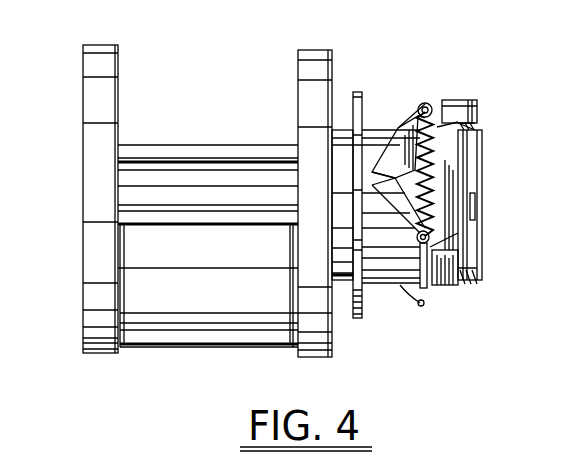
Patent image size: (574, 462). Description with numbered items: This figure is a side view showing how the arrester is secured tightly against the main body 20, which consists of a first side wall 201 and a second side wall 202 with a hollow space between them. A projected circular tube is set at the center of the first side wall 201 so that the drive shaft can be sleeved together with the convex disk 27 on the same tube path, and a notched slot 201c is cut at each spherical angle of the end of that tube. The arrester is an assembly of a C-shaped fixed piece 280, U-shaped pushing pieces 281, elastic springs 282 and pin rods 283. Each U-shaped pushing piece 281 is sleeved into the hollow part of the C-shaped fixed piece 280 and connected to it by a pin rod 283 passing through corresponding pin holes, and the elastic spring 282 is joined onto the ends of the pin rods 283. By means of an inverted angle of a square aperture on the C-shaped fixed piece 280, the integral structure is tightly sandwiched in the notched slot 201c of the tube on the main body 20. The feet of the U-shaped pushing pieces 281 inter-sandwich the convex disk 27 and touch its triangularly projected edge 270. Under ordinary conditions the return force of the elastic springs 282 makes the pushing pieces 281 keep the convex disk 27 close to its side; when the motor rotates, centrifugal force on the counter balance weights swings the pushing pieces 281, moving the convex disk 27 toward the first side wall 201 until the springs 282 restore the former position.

The main body 20 is at (219, 338).
The first side wall 201 is at (316, 62).
The second side wall 202 is at (113, 93).
The notched slot 201c is at (476, 203).
The convex disk 27 is at (378, 268).
The triangularly projected edge 270 is at (385, 172).
The C-shaped fixed piece 280 is at (440, 120).
The U-shaped pushing piece 281 is at (398, 128).
The elastic spring 282 is at (435, 105).
The pin rod 283 is at (427, 284).